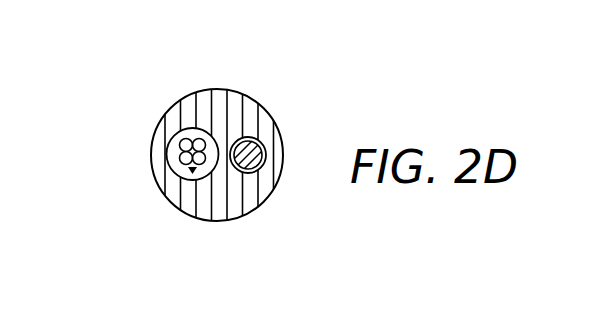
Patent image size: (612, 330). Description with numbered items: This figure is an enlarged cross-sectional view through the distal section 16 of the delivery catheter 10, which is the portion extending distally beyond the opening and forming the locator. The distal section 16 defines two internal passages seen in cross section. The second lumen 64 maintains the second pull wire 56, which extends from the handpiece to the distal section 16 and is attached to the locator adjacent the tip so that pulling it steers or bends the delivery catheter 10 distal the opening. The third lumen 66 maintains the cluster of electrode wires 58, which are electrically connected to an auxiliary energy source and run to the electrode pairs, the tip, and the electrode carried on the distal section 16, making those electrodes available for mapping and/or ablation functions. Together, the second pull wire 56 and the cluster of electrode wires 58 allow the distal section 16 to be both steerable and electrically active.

The delivery catheter 10 is at (232, 241).
The distal section 16 is at (171, 205).
The second pull wire 56 is at (243, 137).
The cluster of electrode wires 58 is at (178, 154).
The second lumen 64 is at (267, 150).
The third lumen 66 is at (190, 128).